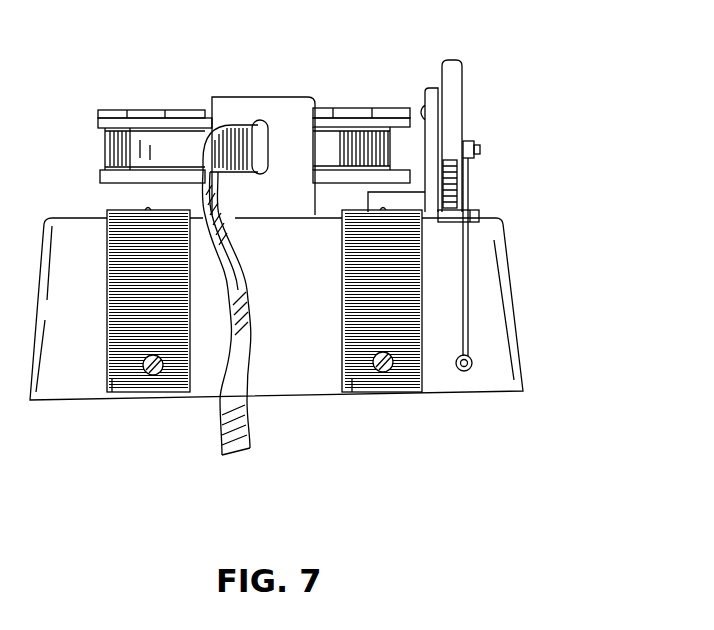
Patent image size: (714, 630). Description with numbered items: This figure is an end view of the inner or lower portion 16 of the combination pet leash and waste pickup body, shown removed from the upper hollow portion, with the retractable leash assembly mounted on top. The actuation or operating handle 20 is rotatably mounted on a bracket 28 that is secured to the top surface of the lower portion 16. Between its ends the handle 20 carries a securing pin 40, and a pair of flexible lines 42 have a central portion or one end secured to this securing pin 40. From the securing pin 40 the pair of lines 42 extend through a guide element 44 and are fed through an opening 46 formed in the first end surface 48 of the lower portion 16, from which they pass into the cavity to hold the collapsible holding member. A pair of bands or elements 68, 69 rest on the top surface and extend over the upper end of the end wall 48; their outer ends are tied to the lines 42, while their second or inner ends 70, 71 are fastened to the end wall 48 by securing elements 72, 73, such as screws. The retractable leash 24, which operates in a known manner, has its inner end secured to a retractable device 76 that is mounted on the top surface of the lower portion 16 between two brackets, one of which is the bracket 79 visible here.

The lower portion 16 is at (605, 214).
The actuation handle 20 is at (462, 88).
The retractable leash 24 is at (248, 432).
The bracket 28 is at (425, 95).
The securing pin 40 is at (479, 146).
The pair of lines 42 is at (463, 197).
The guide element 44 is at (478, 217).
The opening 46 is at (468, 372).
The first end surface 48 is at (304, 342).
The first band 68 is at (110, 290).
The second band 69 is at (345, 290).
The inner end of first band 70 is at (360, 393).
The inner end of second band 71 is at (120, 392).
The securing element 72 is at (388, 373).
The securing element 73 is at (158, 374).
The retractable device 76 is at (150, 110).
The bracket 79 is at (303, 100).